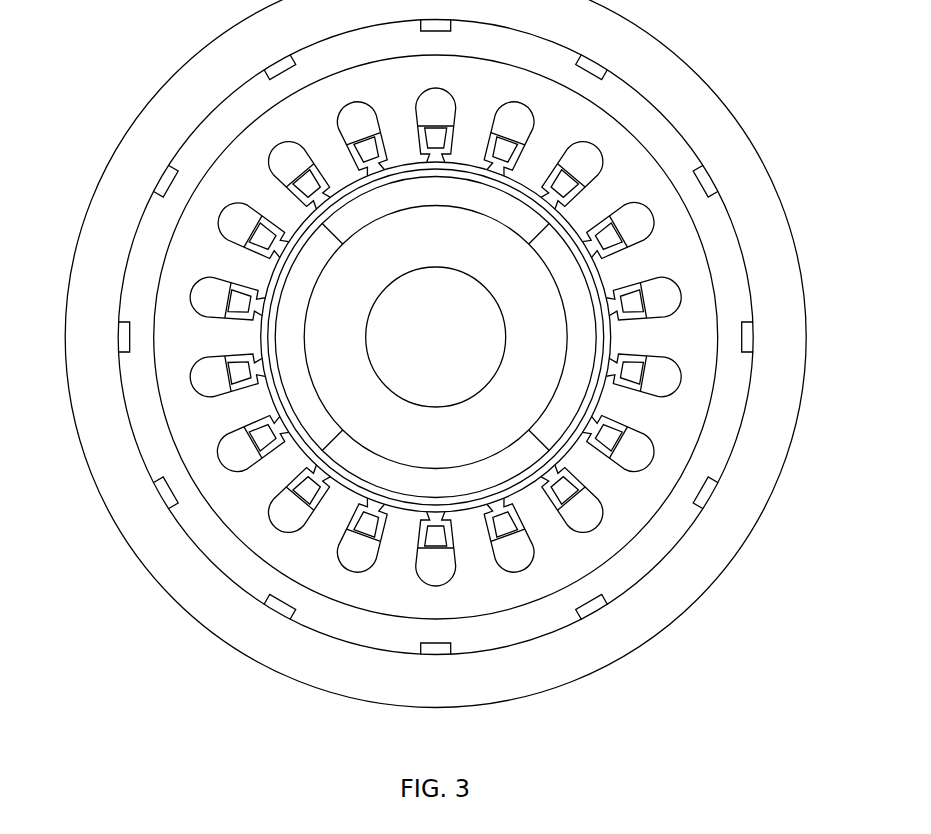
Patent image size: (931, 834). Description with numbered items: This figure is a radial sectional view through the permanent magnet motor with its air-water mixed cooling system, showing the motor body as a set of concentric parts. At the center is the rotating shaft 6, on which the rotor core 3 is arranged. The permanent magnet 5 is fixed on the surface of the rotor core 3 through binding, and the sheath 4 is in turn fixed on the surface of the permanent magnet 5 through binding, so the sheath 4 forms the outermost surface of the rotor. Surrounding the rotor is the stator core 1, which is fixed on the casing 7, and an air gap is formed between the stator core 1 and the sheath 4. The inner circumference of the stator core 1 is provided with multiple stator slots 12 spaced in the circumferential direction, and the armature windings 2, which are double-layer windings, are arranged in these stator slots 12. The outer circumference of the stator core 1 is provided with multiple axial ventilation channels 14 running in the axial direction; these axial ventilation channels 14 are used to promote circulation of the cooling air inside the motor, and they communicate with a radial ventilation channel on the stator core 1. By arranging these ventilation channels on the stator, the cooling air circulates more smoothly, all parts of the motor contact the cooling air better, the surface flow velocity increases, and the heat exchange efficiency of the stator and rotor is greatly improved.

The stator core 1 is at (272, 554).
The armature windings 2 is at (215, 378).
The rotor core 3 is at (488, 450).
The sheath 4 is at (592, 407).
The permanent magnet 5 is at (580, 337).
The rotating shaft 6 is at (472, 277).
The casing 7 is at (643, 82).
The stator slots 12 is at (225, 207).
The axial ventilation channels 14 is at (278, 68).